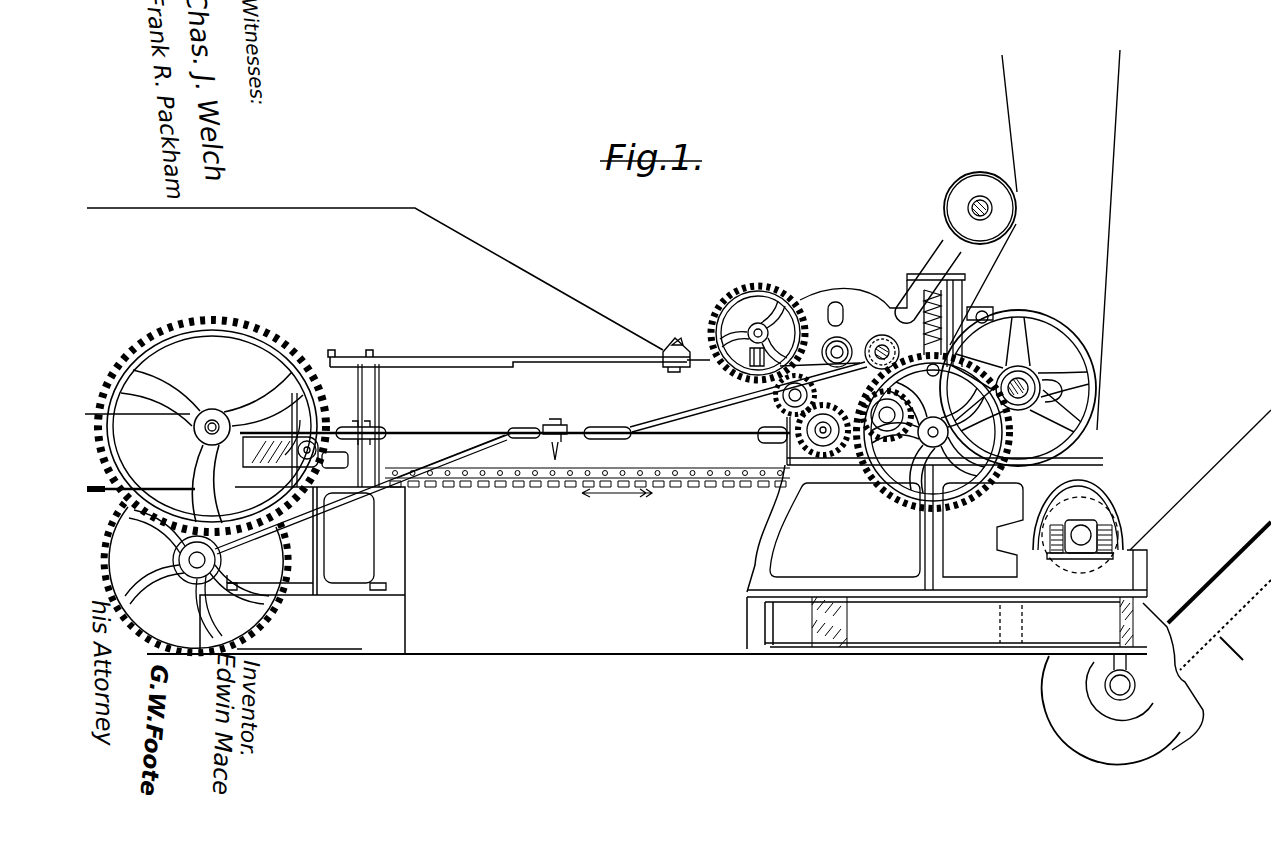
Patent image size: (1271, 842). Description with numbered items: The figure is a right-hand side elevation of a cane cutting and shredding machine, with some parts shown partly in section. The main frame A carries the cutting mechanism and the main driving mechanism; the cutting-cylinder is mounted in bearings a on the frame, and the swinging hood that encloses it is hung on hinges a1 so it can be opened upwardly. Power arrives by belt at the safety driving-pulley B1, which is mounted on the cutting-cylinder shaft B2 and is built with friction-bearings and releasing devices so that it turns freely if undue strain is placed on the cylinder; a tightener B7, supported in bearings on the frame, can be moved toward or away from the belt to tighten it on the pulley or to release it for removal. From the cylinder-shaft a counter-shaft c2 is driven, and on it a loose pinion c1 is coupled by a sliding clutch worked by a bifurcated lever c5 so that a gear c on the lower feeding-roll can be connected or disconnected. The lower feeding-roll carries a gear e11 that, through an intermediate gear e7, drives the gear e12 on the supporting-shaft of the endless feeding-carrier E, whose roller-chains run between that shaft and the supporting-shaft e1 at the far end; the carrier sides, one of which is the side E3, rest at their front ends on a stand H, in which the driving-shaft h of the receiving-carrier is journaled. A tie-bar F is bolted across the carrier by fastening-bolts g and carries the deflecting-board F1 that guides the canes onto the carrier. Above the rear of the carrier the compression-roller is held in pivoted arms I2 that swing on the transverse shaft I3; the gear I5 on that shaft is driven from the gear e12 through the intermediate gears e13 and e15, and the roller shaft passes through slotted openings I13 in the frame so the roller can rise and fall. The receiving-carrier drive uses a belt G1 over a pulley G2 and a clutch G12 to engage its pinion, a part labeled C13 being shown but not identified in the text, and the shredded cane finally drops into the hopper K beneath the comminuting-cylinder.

The main frame A is at (952, 583).
The tightener B7 is at (960, 173).
The safety driving-pulley B1 is at (1040, 317).
The cutting-cylinder shaft B2 is at (1023, 387).
The gear c is at (953, 467).
The pinion c1 is at (948, 320).
The counter-shaft c2 is at (883, 348).
The bifurcated lever c5 is at (748, 397).
The link C13 is at (387, 490).
The supporting-shaft e1 is at (305, 443).
The intermediate gear e7 is at (887, 407).
The gear on lower feeding-roll e11 is at (943, 483).
The feeding-carrier gear e12 is at (850, 457).
The intermediate gear e13 is at (805, 440).
The intermediate gear e15 is at (775, 408).
The feeding-carrier E is at (515, 441).
The carrier side E3 is at (402, 468).
The tie beam or bar F is at (676, 345).
The deflecting-board F1 is at (547, 282).
The fastening-bolts g is at (667, 350).
The belt G1 is at (177, 557).
The pulley G2 is at (208, 328).
The sliding clutch G12 is at (193, 570).
The driving-shaft of receiving-carrier h is at (215, 422).
The stand H is at (302, 570).
The pivoted arms I2 is at (820, 337).
The transverse shaft I3 is at (753, 333).
The gear I5 is at (730, 312).
The slotted openings I13 is at (835, 305).
The hopper K is at (1156, 587).
The bearings a is at (1081, 527).
The hinges a1 is at (1078, 526).